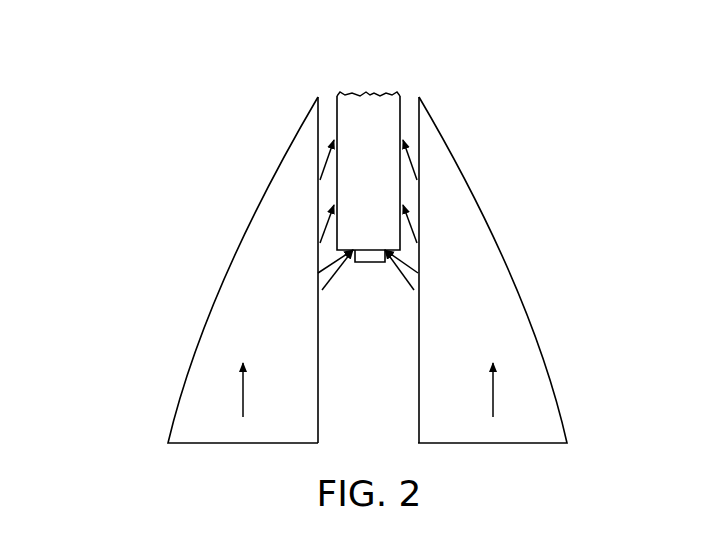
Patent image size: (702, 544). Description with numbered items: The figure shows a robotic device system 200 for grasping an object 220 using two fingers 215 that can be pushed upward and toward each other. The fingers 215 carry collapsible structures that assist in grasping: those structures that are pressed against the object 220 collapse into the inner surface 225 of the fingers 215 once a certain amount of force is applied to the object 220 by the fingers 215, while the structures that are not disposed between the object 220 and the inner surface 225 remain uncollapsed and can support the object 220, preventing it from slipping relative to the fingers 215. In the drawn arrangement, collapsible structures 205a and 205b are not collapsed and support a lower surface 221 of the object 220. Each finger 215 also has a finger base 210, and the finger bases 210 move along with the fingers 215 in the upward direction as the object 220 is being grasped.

The robotic device system 200 is at (338, 240).
The collapsible structure 205a is at (318, 280).
The collapsible structure 205b is at (421, 280).
The finger base 210 is at (245, 398).
The finger 215 is at (484, 222).
The object 220 is at (375, 94).
The lower surface 221 is at (357, 251).
The inner surface 225 is at (318, 395).